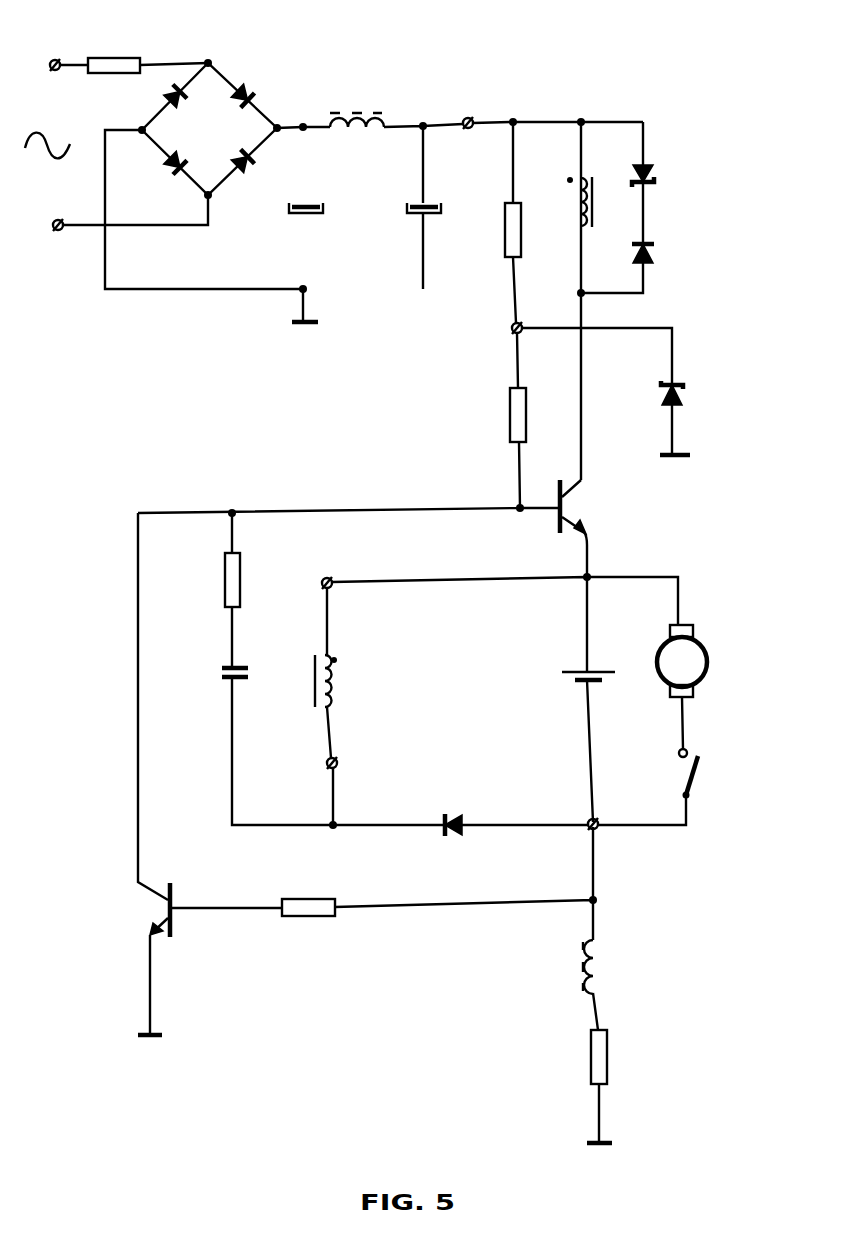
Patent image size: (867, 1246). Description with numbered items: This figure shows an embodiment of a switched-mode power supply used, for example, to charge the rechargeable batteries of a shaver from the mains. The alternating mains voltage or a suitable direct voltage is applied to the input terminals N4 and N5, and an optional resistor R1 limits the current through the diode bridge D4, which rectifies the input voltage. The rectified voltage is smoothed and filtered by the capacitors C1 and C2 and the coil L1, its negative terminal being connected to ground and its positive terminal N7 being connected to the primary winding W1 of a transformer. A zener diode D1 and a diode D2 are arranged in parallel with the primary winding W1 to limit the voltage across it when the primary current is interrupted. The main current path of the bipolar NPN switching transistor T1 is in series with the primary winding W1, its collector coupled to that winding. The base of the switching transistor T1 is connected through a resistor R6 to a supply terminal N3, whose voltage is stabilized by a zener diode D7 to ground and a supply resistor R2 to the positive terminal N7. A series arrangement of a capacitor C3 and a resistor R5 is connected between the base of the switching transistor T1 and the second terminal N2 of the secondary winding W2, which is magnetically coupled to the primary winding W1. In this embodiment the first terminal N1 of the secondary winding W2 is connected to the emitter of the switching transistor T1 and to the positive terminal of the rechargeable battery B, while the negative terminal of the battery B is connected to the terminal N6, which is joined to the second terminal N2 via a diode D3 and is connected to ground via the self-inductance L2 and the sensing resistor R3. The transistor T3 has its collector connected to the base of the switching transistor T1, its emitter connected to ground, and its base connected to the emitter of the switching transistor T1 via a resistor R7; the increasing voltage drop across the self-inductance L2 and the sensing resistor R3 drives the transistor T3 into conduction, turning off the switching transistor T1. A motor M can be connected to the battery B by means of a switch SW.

The input terminal N4 is at (57, 58).
The input terminal N5 is at (58, 231).
The resistor R1 is at (120, 57).
The diode bridge D4 is at (223, 139).
The coil L1 is at (357, 113).
The positive terminal N7 is at (470, 117).
The capacitor C1 is at (316, 215).
The capacitor C2 is at (414, 215).
The supply resistor R2 is at (505, 228).
The primary winding W1 is at (593, 210).
The zener diode D1 is at (655, 170).
The diode D2 is at (655, 255).
The supply terminal N3 is at (512, 328).
The resistor R6 is at (510, 424).
The zener diode D7 is at (662, 400).
The switching transistor T1 is at (578, 503).
The resistor R5 is at (225, 580).
The first terminal N1 is at (327, 577).
The capacitor C3 is at (222, 672).
The secondary winding W2 is at (334, 686).
The second terminal N2 is at (338, 762).
The rechargeable battery B is at (574, 676).
The motor M is at (698, 620).
The switch SW is at (684, 772).
The diode D3 is at (455, 812).
The terminal N6 is at (589, 817).
The transistor T3 is at (166, 907).
The resistor R7 is at (306, 917).
The self-inductance L2 is at (598, 972).
The sensing resistor R3 is at (607, 1060).